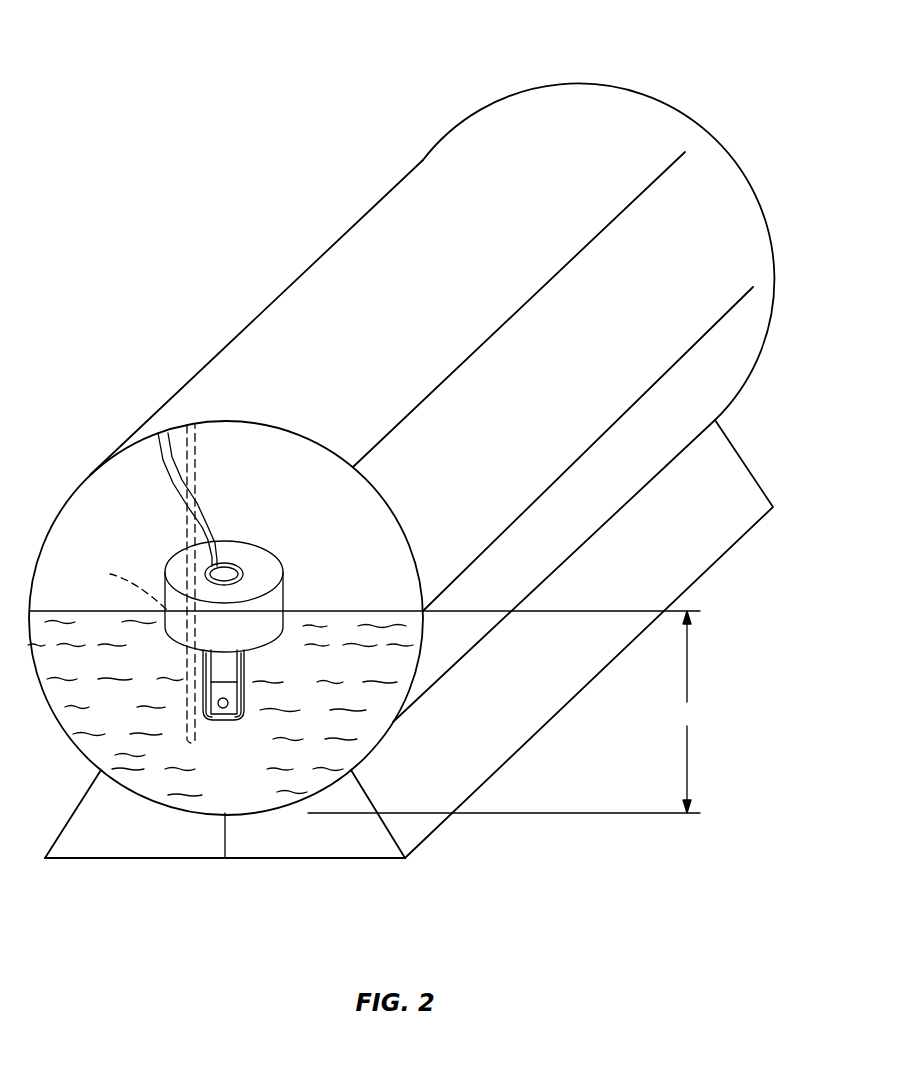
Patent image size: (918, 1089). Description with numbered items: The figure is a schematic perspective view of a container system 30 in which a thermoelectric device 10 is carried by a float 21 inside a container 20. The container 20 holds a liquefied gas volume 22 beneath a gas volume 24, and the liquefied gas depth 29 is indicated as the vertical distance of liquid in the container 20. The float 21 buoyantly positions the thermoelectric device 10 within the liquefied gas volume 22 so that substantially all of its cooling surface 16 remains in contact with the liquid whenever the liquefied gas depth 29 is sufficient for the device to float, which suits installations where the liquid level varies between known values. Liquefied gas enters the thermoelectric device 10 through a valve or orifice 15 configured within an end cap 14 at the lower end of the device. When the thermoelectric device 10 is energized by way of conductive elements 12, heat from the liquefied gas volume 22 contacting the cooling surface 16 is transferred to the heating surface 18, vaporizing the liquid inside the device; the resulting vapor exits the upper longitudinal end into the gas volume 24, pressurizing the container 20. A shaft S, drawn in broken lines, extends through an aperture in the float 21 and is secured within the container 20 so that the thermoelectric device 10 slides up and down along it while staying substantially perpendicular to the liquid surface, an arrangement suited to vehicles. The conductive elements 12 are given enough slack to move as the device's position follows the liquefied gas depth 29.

The thermoelectric device 10 is at (260, 697).
The conductive elements 12 is at (168, 463).
The end cap 14 is at (240, 709).
The valve or orifice 15 is at (223, 708).
The cooling surface 16 is at (250, 653).
The heating surface 18 is at (229, 566).
The container 20 is at (362, 238).
The float 21 is at (267, 568).
The liquefied gas volume 22 is at (131, 716).
The gas volume 24 is at (92, 534).
The liquefied gas depth 29 is at (364, 712).
The container system 30 is at (654, 98).
The shaft S is at (130, 588).